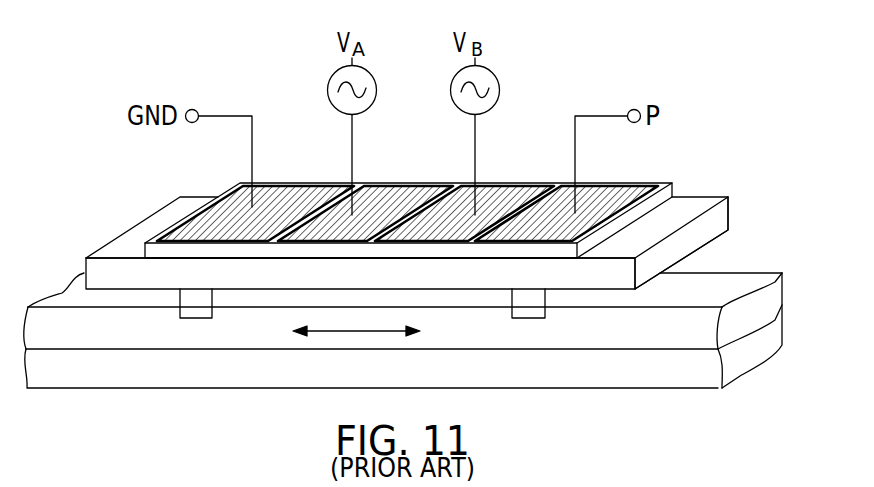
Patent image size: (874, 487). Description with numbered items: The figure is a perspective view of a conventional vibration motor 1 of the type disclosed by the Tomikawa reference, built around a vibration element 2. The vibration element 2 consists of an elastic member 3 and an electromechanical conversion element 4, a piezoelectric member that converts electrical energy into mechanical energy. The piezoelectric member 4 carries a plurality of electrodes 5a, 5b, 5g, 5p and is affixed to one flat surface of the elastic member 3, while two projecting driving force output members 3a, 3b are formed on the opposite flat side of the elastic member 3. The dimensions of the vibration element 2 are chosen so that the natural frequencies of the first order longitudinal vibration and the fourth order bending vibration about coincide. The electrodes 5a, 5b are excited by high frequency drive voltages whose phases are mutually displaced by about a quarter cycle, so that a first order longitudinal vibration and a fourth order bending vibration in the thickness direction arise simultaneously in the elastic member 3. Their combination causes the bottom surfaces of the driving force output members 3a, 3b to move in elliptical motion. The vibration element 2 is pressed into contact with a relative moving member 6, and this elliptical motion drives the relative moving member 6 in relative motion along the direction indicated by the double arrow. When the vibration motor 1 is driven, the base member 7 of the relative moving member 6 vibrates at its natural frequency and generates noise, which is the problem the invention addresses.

The vibration motor 1 is at (561, 64).
The vibration element 2 is at (688, 186).
The elastic member 3 is at (728, 213).
The driving force output member 3a is at (195, 302).
The driving force output member 3b is at (522, 302).
The electromechanical conversion element 4 is at (298, 252).
The electrode 5g is at (264, 198).
The electrode 5a is at (368, 198).
The electrode 5b is at (498, 198).
The electrode 5p is at (590, 193).
The relative moving member 6 is at (767, 302).
The base member 7 is at (757, 357).